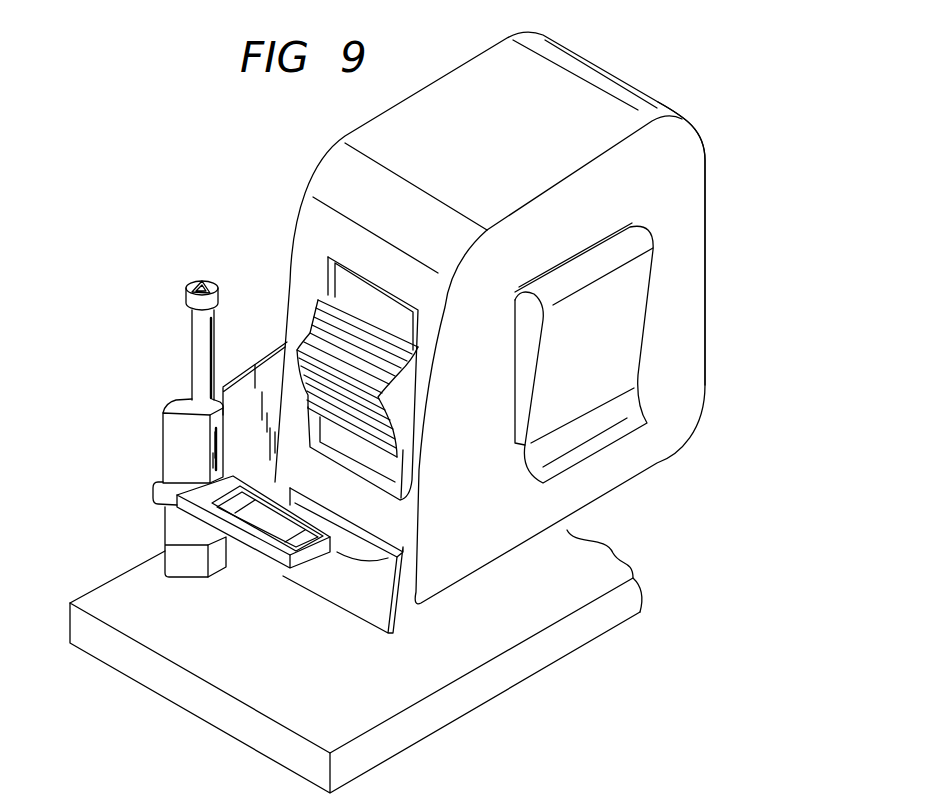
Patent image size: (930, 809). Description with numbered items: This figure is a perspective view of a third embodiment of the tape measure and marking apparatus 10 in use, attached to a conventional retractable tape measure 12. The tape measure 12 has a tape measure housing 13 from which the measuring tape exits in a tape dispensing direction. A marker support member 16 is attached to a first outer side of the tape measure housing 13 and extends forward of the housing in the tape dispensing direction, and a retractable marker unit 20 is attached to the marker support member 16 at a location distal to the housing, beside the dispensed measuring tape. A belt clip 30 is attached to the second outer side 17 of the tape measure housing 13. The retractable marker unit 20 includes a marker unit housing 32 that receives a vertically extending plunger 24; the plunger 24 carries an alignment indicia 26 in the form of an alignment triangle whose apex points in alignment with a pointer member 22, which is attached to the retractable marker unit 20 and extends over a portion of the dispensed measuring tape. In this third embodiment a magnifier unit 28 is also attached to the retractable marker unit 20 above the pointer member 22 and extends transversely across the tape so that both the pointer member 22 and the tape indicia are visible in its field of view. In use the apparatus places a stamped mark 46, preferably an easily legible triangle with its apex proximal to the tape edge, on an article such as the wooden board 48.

The tape measure and marking apparatus 10 is at (168, 238).
The tape measure 12 is at (672, 88).
The tape measure housing 13 is at (562, 108).
The marker support member 16 is at (253, 387).
The second outer side 17 is at (667, 158).
The retractable marker unit 20 is at (152, 465).
The pointer member 22 is at (165, 546).
The plunger 24 is at (197, 345).
The alignment indicia 26 is at (188, 283).
The magnifier unit 28 is at (284, 577).
The belt clip 30 is at (627, 342).
The marker unit housing 32 is at (183, 442).
The stamped mark 46 is at (196, 601).
The wooden board 48 is at (245, 727).